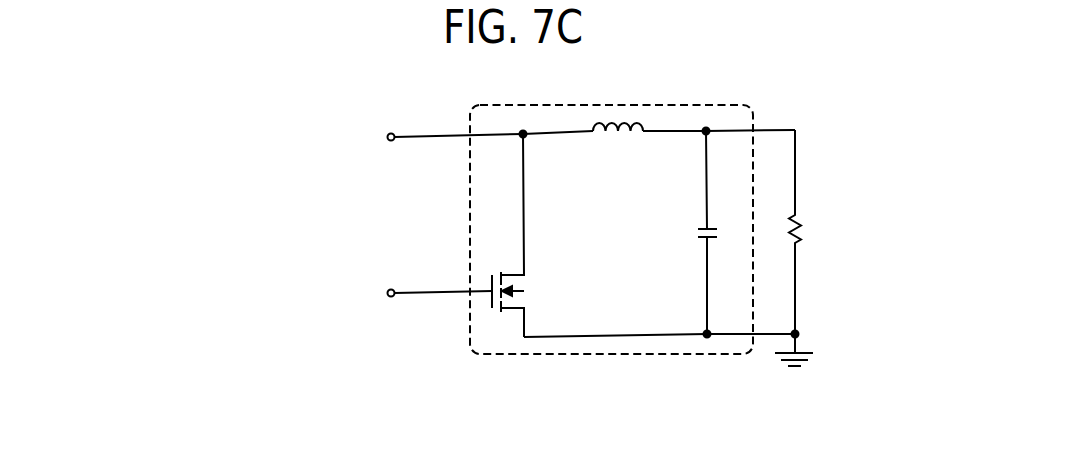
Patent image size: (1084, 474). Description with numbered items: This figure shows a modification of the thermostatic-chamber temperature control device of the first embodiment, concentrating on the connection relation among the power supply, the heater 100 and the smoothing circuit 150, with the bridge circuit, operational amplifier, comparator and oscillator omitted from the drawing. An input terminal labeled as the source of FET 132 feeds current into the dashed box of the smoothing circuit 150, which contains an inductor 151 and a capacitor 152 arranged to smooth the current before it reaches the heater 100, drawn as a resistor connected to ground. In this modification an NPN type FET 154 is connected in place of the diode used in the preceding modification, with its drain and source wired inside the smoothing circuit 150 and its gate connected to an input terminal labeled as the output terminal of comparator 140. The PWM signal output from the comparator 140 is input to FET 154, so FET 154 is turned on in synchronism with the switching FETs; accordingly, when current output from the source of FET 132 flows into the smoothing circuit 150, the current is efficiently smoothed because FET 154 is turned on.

The heater 100 is at (804, 221).
The FET 132 is at (338, 141).
The comparator 140 is at (321, 302).
The smoothing circuit 150 is at (667, 357).
The inductor L 151 is at (610, 127).
The capacitor C 152 is at (703, 235).
The NPN type FET 154 is at (527, 283).